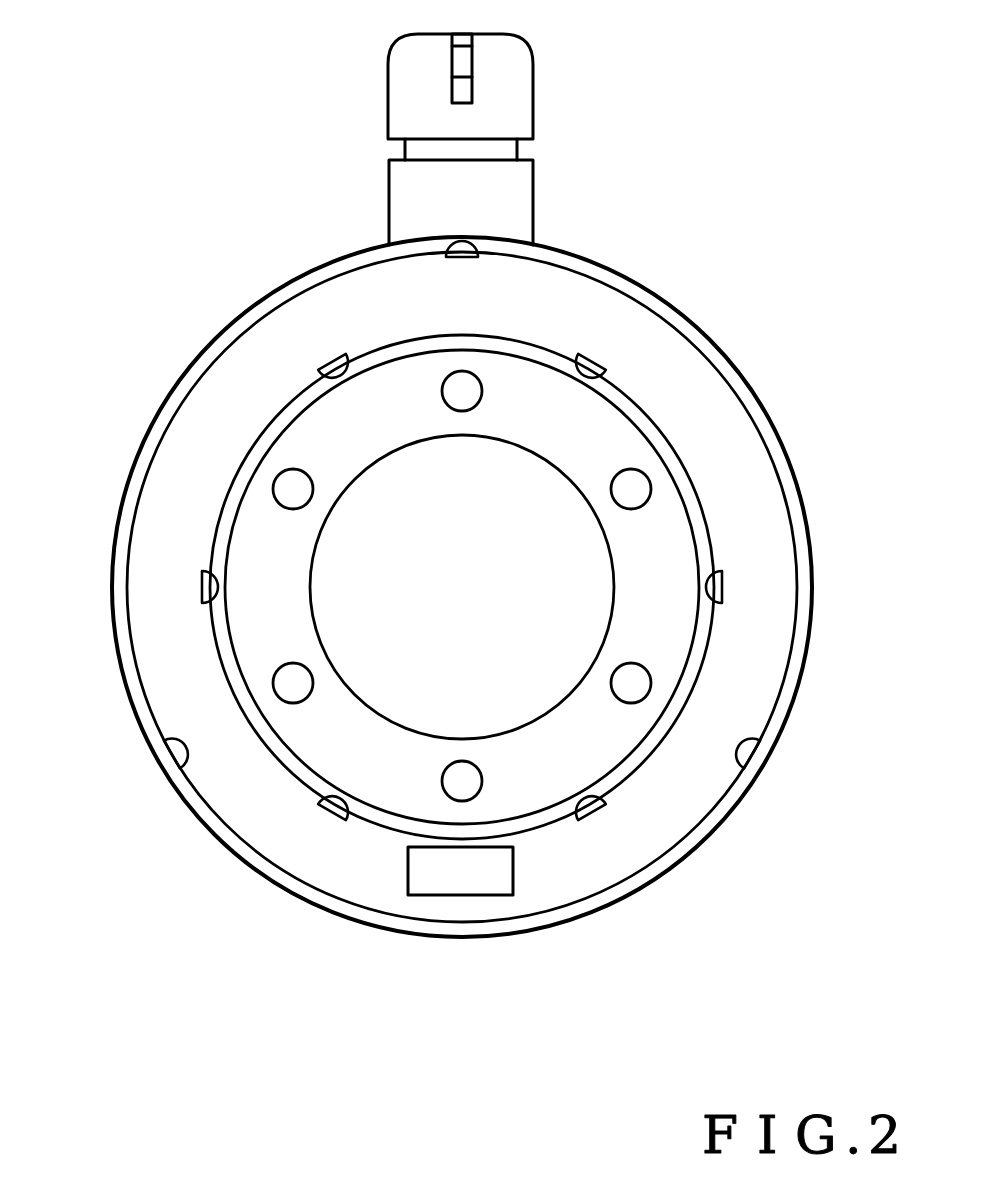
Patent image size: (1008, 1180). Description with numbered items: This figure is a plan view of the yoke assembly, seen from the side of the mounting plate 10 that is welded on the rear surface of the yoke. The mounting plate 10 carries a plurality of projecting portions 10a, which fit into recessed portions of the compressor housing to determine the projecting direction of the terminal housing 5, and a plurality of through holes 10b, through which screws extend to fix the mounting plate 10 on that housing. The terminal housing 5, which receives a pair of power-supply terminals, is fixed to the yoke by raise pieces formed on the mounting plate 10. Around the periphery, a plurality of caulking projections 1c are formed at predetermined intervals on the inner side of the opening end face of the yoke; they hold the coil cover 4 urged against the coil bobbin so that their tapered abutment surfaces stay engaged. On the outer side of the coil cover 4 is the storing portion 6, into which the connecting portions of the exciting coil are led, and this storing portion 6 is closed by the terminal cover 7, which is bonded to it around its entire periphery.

The caulking projections 1c is at (470, 252).
The coil cover 4 is at (758, 512).
The terminal housing 5 is at (513, 96).
The storing portion 6 is at (445, 897).
The terminal cover 7 is at (488, 878).
The mounting plate 10 is at (632, 445).
The projecting portions 10a is at (462, 393).
The through holes 10b is at (296, 489).